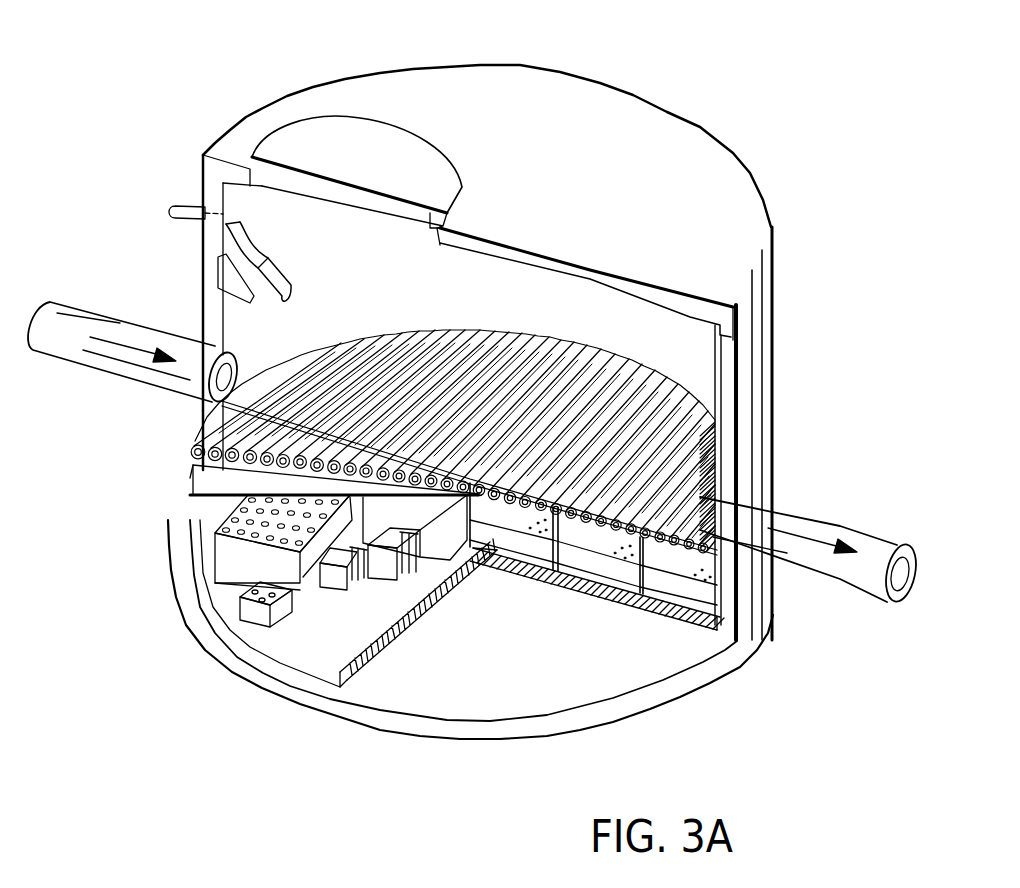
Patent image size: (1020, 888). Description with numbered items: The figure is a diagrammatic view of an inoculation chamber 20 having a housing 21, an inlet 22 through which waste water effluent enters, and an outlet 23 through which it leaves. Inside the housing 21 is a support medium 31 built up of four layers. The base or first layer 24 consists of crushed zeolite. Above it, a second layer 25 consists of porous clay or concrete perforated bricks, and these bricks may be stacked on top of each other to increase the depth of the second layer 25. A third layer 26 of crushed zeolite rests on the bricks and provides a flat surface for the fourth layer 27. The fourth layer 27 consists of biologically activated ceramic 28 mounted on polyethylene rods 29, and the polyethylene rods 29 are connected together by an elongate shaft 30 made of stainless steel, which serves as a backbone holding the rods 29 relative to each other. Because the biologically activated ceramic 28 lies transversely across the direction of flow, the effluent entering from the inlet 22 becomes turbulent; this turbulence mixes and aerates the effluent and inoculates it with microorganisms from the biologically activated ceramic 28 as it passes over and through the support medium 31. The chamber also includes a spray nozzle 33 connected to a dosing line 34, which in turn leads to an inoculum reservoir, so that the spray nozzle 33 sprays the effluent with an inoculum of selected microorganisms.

The inoculation chamber 20 is at (732, 83).
The housing 21 is at (722, 384).
The inlet 22 is at (85, 322).
The outlet 23 is at (860, 578).
The first layer 24 is at (400, 636).
The second layer 25 is at (240, 557).
The third layer 26 is at (193, 480).
The fourth layer 27 is at (401, 318).
The biologically activated ceramic 28 is at (490, 336).
The polyethylene rods 29 is at (213, 483).
The elongate shaft 30 is at (513, 513).
The support medium 31 is at (639, 481).
The spray nozzle 33 is at (280, 300).
The dosing line 34 is at (178, 204).